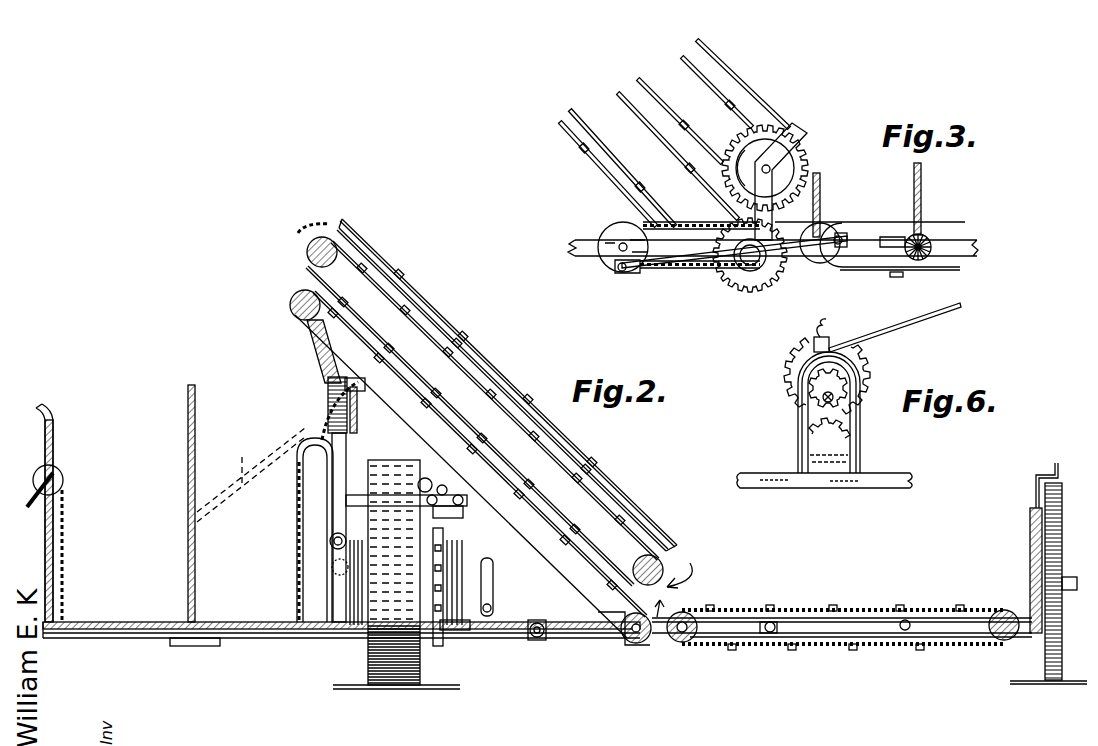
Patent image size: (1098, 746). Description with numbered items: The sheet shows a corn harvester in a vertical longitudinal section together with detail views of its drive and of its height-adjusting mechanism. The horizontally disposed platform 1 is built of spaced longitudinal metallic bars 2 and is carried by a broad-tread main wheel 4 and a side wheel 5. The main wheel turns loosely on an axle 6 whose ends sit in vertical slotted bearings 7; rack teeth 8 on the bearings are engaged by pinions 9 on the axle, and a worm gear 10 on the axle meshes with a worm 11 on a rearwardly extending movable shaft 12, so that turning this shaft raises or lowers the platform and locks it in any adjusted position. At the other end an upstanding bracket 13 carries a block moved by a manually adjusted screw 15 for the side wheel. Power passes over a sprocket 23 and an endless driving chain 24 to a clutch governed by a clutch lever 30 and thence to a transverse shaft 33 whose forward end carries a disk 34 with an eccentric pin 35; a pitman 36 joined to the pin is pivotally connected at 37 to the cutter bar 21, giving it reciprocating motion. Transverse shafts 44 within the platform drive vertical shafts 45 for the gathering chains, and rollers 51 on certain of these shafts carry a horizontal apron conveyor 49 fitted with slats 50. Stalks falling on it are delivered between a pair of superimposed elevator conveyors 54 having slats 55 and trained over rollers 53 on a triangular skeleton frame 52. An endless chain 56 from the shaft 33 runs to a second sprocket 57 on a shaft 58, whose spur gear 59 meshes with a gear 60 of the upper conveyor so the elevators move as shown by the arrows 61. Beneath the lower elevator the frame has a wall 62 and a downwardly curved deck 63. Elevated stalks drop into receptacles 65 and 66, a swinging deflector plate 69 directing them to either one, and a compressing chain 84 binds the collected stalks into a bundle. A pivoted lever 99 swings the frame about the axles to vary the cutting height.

In FIG. 2, the platform 1 is at (951, 617).
In FIG. 6, the platform 1 is at (874, 473).
In FIG. 2, the longitudinally extending metallic bars 2 is at (969, 630).
In FIG. 3, the longitudinally extending metallic bars 2 is at (894, 258).
In FIG. 2, the main wheel 4 is at (422, 675).
In FIG. 2, the side wheel 5 is at (1057, 558).
In FIG. 2, the axle 6 is at (368, 568).
In FIG. 6, the axle 6 is at (792, 403).
In FIG. 2, the slotted bearings 7 is at (358, 567).
In FIG. 6, the slotted bearings 7 is at (853, 438).
In FIG. 6, the rack teeth 8 is at (829, 441).
In FIG. 6, the pinions 9 is at (824, 400).
In FIG. 2, the worm gear 10 is at (331, 539).
In FIG. 6, the worm gear 10 is at (867, 390).
In FIG. 6, the worm 11 is at (823, 334).
In FIG. 2, the movable shaft 12 is at (343, 494).
In FIG. 6, the movable shaft 12 is at (921, 326).
In FIG. 2, the upstanding bracket 13 is at (1030, 536).
In FIG. 2, the manually adjusted screw 15 is at (1035, 490).
In FIG. 3, the cutter bar 21 is at (891, 237).
In FIG. 2, the sprocket 23 is at (440, 548).
In FIG. 2, the endless driving chain 24 is at (447, 647).
In FIG. 2, the clutch lever 30 is at (493, 598).
In FIG. 2, the shaft 33 is at (538, 641).
In FIG. 3, the disk 34 is at (611, 233).
In FIG. 3, the eccentrically located pin 35 is at (622, 273).
In FIG. 3, the pitman 36 is at (687, 262).
In FIG. 3, the pivotal connection 37 is at (842, 233).
In FIG. 2, the transversely extending shafts 44 is at (1005, 610).
In FIG. 3, the transversely extending shafts 44 is at (928, 242).
In FIG. 3, the vertically extending shafts 45 is at (821, 190).
In FIG. 2, the longitudinally movable conveyor 49 is at (913, 608).
In FIG. 3, the longitudinally movable conveyor 49 is at (873, 272).
In FIG. 2, the slats 50 is at (835, 608).
In FIG. 2, the rollers 51 is at (684, 644).
In FIG. 2, the skeleton frame 52 is at (623, 608).
In FIG. 2, the rollers 53 is at (307, 255).
In FIG. 2, the elevator conveyors 54 is at (572, 546).
In FIG. 3, the elevator conveyors 54 is at (680, 115).
In FIG. 2, the slats 55 is at (572, 543).
In FIG. 3, the endless chain 56 is at (703, 250).
In FIG. 3, the second sprocket 57 is at (765, 262).
In FIG. 2, the shaft 58 is at (629, 646).
In FIG. 3, the spur gear 59 is at (758, 280).
In FIG. 3, the gear 60 is at (790, 172).
In FIG. 2, the arrows 61 is at (738, 605).
In FIG. 2, the wall 62 is at (305, 492).
In FIG. 2, the downwardly curved deck 63 is at (326, 403).
In FIG. 2, the receptacle 65 is at (251, 512).
In FIG. 2, the receptacle 66 is at (86, 513).
In FIG. 2, the deflector plate 69 is at (196, 460).
In FIG. 2, the compressing chain 84 is at (300, 513).
In FIG. 2, the pivoted lever 99 is at (357, 415).